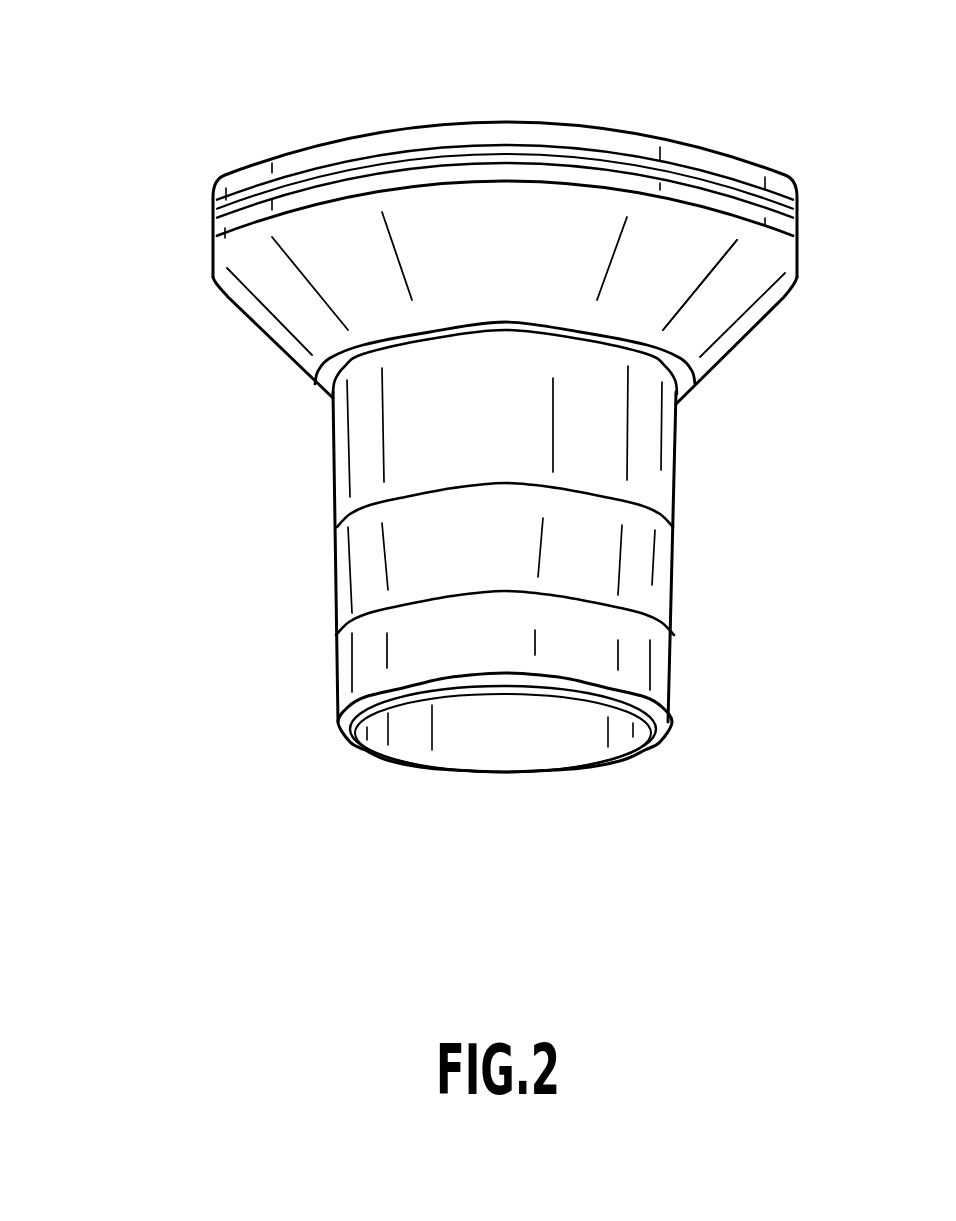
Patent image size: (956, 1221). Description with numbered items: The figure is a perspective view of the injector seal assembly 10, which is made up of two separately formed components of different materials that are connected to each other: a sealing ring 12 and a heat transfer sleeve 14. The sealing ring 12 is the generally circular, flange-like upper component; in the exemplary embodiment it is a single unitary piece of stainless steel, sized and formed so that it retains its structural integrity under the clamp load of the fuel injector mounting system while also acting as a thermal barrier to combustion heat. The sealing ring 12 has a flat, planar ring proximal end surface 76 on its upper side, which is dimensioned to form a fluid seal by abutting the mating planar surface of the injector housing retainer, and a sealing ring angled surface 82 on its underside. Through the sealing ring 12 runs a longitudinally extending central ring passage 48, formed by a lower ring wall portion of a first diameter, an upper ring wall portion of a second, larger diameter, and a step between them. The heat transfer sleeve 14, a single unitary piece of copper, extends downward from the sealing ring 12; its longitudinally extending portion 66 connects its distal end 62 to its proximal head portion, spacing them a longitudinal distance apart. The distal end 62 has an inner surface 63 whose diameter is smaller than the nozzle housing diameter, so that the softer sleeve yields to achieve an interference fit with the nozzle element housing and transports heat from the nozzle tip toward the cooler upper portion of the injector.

The injector seal assembly 10 is at (145, 154).
The sealing ring 12 is at (236, 301).
The heat transfer sleeve 14 is at (657, 430).
The central ring passage 48 is at (328, 396).
The distal end 62 is at (650, 678).
The inner surface 63 is at (472, 745).
The longitudinally extending portion 66 is at (333, 502).
The ring proximal end surface 76 is at (535, 122).
The sealing ring angled surface 82 is at (718, 325).